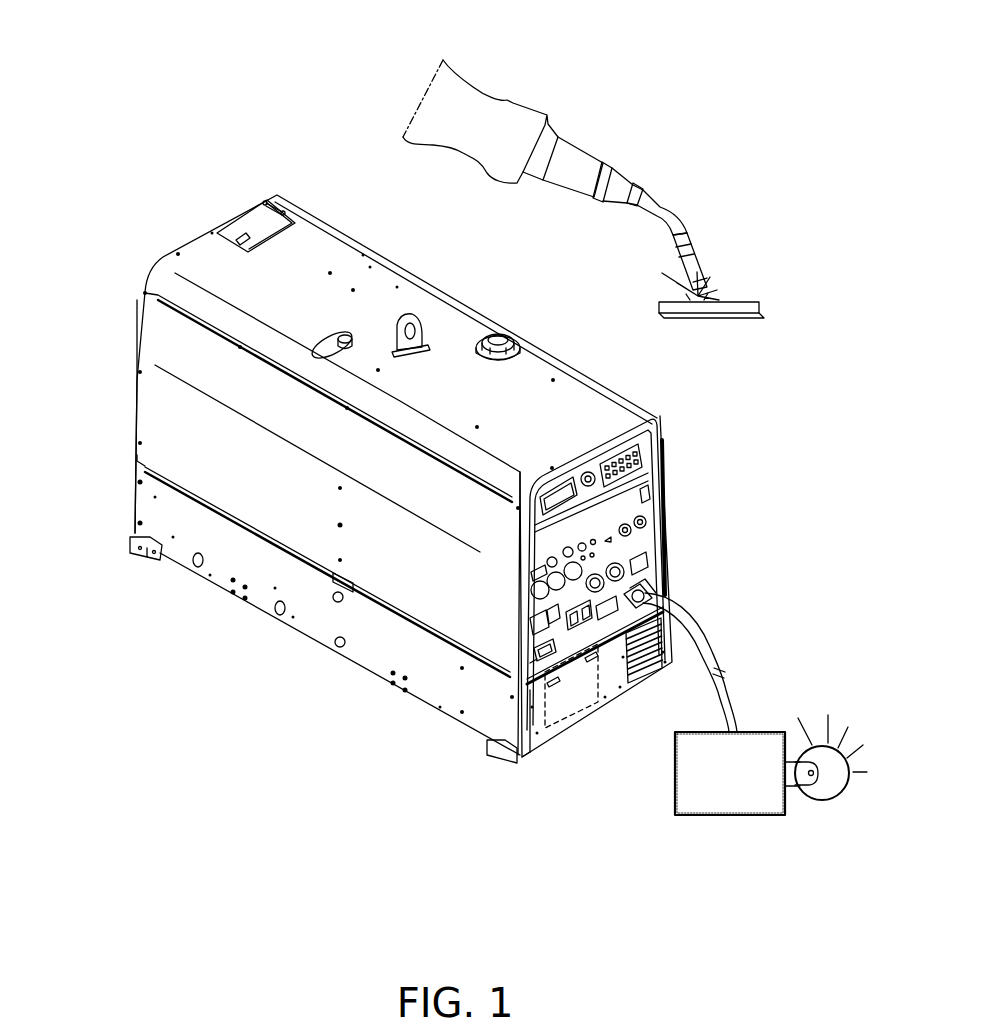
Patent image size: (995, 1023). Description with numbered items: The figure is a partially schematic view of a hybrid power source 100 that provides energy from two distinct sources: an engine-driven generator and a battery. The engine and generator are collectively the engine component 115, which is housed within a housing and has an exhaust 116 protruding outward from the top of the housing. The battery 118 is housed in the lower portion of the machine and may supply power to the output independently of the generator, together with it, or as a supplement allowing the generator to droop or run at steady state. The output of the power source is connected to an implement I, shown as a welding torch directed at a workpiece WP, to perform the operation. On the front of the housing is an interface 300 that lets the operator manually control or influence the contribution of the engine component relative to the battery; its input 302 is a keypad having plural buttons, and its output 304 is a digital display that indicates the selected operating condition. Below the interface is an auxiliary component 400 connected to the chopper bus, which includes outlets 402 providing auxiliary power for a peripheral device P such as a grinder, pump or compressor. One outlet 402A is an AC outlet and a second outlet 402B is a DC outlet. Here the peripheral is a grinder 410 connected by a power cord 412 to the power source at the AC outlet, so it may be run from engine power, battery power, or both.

The power source 100 is at (138, 143).
The engine component 115 is at (155, 339).
The exhaust 116 is at (338, 333).
The battery 118 is at (578, 694).
The interface 300 is at (597, 495).
The input 302 is at (634, 458).
The output 304 is at (565, 497).
The auxiliary component 400 is at (597, 642).
The outlet 402 is at (522, 664).
The AC outlet 402A is at (645, 582).
The DC outlet 402B is at (558, 658).
The grinder 410 is at (823, 793).
The power cord 412 is at (697, 623).
The implement I is at (476, 108).
The workpiece WP is at (743, 297).
The peripheral device P is at (762, 726).